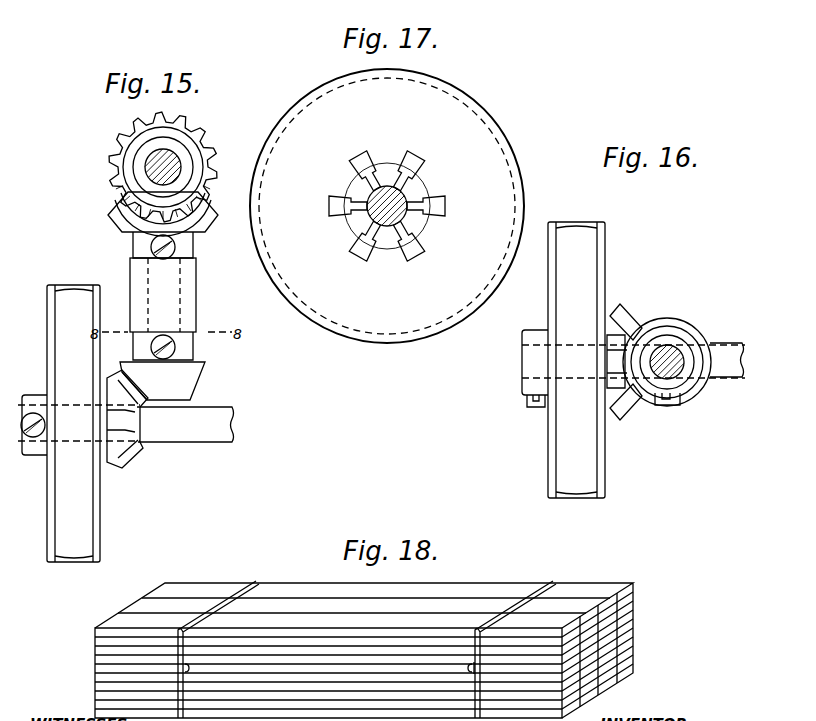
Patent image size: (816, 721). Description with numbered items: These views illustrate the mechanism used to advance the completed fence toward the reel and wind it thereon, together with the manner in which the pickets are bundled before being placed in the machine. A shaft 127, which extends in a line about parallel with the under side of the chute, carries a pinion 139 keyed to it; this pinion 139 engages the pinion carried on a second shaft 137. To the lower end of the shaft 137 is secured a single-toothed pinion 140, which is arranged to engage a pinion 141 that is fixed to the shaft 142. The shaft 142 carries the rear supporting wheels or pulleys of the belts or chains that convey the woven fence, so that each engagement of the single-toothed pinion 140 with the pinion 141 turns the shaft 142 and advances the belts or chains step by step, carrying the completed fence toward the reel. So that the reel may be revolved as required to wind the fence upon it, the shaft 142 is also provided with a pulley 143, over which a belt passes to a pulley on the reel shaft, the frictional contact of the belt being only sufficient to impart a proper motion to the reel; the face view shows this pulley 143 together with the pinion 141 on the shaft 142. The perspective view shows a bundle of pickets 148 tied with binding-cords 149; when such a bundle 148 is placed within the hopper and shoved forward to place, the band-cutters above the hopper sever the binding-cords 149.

In FIG. 15, the shaft 127 is at (170, 160).
In FIG. 15, the pinion 139 is at (204, 161).
In FIG. 15, the shaft 137 is at (168, 301).
In FIG. 16, the shaft 137 is at (667, 344).
In FIG. 15, the single-toothed pinion 140 is at (162, 381).
In FIG. 16, the single-toothed pinion 140 is at (690, 337).
In FIG. 15, the pinion 141 is at (125, 453).
In FIG. 17, the pinion 141 is at (430, 208).
In FIG. 16, the pinion 141 is at (630, 410).
In FIG. 15, the shaft 142 is at (126, 423).
In FIG. 17, the shaft 142 is at (405, 201).
In FIG. 16, the shaft 142 is at (522, 358).
In FIG. 15, the pulley 143 is at (60, 423).
In FIG. 17, the pulley 143 is at (387, 206).
In FIG. 16, the pulley 143 is at (576, 360).
In FIG. 18, the bundle of pickets 148 is at (465, 598).
In FIG. 18, the binding-cords 149 is at (258, 583).